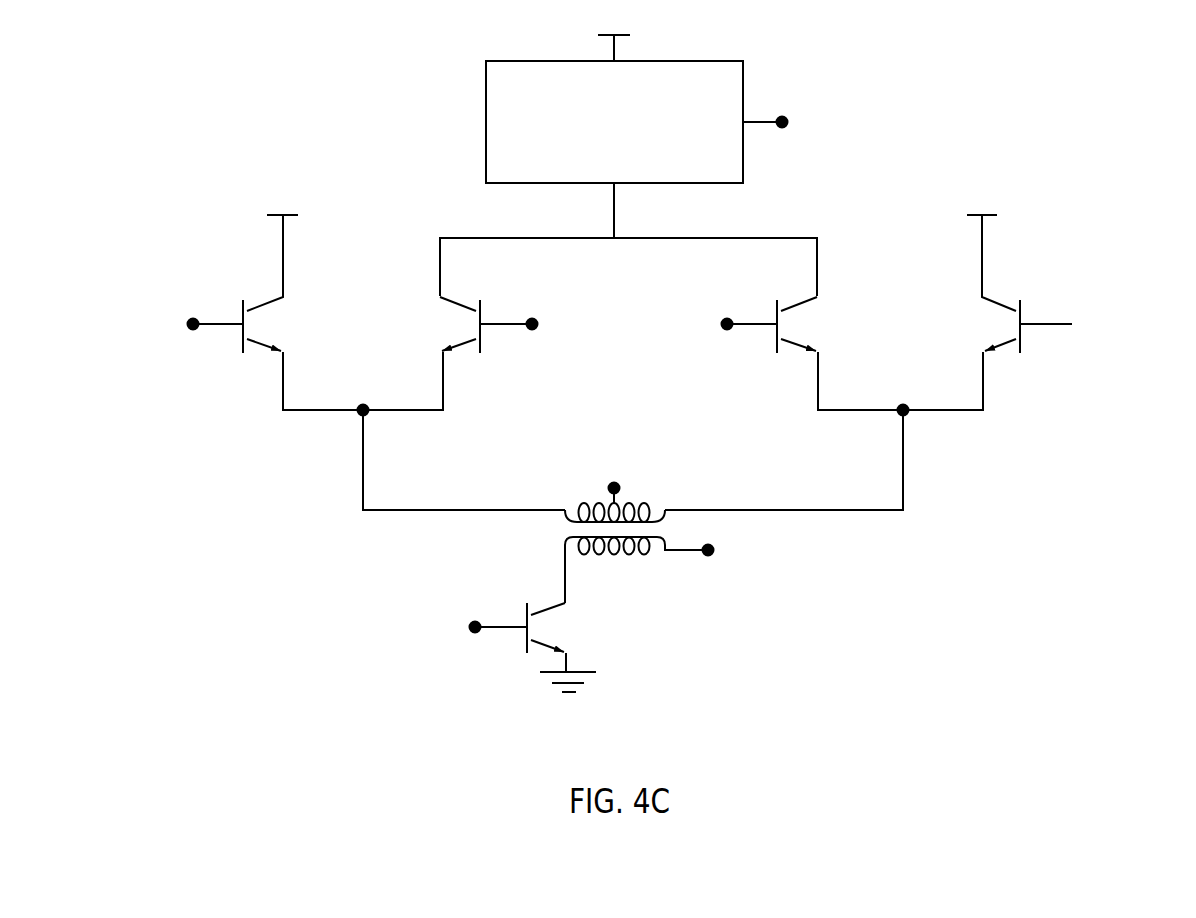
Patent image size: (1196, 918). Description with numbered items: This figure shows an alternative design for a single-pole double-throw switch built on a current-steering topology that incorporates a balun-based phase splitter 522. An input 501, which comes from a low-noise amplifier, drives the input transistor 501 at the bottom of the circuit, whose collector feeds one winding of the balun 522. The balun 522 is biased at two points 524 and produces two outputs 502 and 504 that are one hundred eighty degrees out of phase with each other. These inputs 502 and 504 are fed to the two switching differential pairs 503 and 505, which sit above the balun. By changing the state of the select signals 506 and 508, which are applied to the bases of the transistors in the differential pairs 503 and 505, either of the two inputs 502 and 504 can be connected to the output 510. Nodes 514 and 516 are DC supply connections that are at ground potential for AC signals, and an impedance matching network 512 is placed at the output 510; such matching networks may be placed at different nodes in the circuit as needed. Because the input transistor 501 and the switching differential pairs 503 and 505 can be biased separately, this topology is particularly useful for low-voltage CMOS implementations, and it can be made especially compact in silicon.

The input transistor 501 is at (457, 627).
The input 502 is at (343, 462).
The differential pair 503 is at (457, 324).
The input 504 is at (915, 466).
The differential pair 505 is at (992, 324).
The select signal 506 is at (552, 324).
The select signal 508 is at (173, 324).
The output 510 is at (812, 122).
The impedance matching network 512 is at (633, 174).
The node 514 is at (277, 201).
The node 516 is at (1020, 211).
The balun-based phase splitter 522 is at (634, 576).
The bias point 524 is at (601, 468).